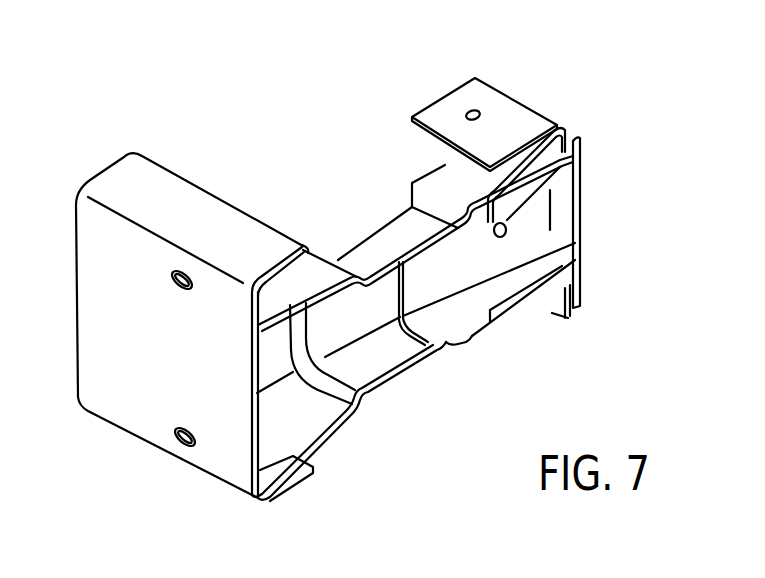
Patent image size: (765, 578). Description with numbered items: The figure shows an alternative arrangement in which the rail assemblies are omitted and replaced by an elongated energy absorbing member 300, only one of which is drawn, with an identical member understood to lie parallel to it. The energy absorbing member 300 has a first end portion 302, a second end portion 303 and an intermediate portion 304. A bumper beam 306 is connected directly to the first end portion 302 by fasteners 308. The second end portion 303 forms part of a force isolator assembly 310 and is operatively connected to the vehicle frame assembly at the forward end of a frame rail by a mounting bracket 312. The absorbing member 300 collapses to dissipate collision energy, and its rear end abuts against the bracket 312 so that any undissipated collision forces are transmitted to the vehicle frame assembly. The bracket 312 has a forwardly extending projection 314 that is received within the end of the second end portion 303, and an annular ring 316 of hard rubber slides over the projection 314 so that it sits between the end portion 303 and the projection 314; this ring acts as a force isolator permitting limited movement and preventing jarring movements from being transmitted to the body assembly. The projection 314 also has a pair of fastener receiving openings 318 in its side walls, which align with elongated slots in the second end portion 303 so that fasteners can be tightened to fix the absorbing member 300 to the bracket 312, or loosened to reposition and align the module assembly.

The energy absorbing member 300 is at (338, 195).
The first end portion 302 is at (318, 440).
The second end portion 303 is at (458, 173).
The intermediate portion 304 is at (382, 242).
The bumper beam 306 is at (127, 378).
The fasteners 308 is at (177, 268).
The force isolator assembly 310 is at (592, 203).
The mounting bracket 312 is at (575, 138).
The projection 314 is at (448, 333).
The annular ring 316 is at (517, 298).
The fastener receiving openings 318 is at (508, 232).